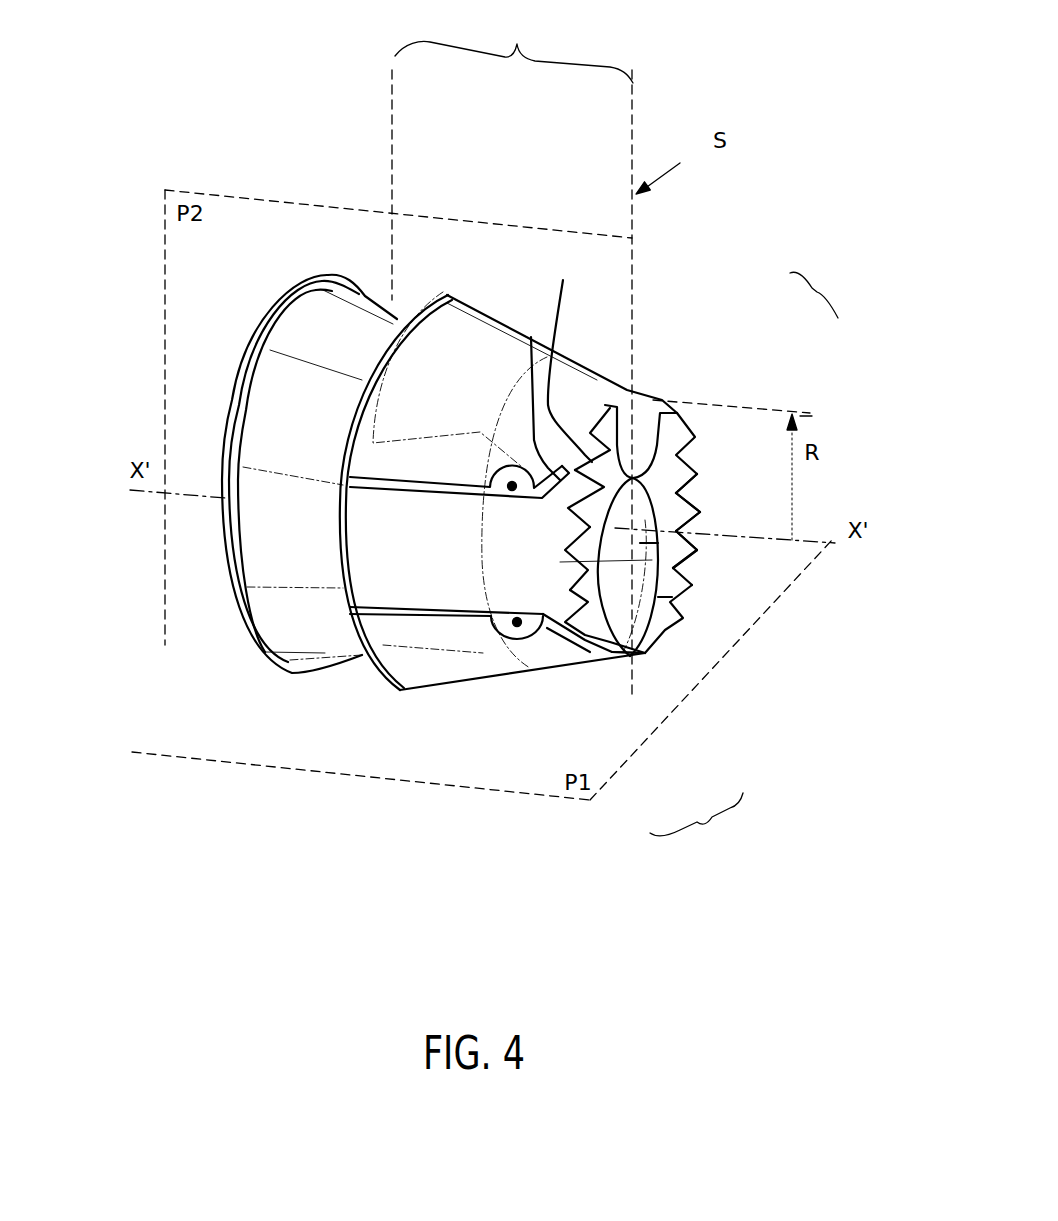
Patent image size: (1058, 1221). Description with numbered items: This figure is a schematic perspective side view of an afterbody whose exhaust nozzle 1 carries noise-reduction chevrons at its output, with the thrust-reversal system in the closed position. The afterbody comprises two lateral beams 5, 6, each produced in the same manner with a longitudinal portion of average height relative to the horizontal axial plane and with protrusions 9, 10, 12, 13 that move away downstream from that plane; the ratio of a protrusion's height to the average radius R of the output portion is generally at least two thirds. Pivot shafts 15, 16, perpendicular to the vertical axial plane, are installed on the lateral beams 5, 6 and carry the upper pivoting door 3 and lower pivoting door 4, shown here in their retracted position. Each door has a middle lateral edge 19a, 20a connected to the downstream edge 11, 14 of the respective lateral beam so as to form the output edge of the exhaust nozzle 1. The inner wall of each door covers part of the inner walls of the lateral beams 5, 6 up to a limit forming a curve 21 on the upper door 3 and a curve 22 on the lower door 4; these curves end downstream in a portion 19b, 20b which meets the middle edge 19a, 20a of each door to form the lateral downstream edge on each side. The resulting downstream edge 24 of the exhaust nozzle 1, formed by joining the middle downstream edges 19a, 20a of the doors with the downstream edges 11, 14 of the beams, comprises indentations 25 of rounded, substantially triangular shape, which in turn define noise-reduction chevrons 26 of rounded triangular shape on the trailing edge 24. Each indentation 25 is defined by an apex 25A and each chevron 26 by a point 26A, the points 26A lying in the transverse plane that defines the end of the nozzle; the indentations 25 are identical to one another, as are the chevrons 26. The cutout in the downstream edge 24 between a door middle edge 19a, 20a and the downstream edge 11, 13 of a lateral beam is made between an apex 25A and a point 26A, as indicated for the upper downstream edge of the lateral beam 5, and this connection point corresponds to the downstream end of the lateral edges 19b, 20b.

The exhaust nozzle 1 is at (514, 45).
The upper pivoting door 3 is at (477, 308).
The lower pivoting door 4 is at (408, 667).
The lateral beam 5 is at (380, 563).
The lateral beam 6 is at (707, 493).
The protrusion 9 is at (522, 464).
The protrusion 10 is at (587, 637).
The downstream edge of lateral beam 11 is at (628, 655).
The protrusion 12 is at (686, 440).
The protrusion 13 is at (690, 597).
The downstream edge of lateral beam 14 is at (697, 545).
The pivot shaft 15 is at (508, 479).
The pivot shaft 16 is at (512, 628).
The middle lateral edge of upper door 19a is at (623, 393).
The lateral downstream edge of upper door 19b is at (677, 440).
The middle lateral edge of lower door 20a is at (648, 657).
The lateral downstream edge of lower door 20b is at (668, 605).
The curve 21 is at (613, 418).
The curve 22 is at (547, 630).
The downstream edge 24 is at (748, 560).
The indentation 25 is at (695, 523).
The noise-reduction chevron 26 is at (697, 545).
The apex of indentation 25A is at (531, 337).
The point of chevron 26A is at (563, 280).